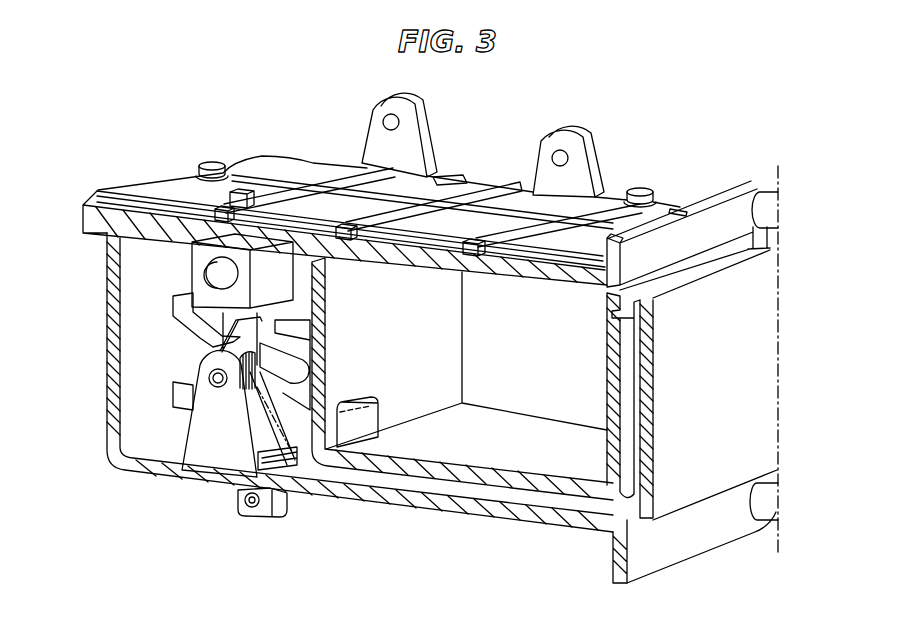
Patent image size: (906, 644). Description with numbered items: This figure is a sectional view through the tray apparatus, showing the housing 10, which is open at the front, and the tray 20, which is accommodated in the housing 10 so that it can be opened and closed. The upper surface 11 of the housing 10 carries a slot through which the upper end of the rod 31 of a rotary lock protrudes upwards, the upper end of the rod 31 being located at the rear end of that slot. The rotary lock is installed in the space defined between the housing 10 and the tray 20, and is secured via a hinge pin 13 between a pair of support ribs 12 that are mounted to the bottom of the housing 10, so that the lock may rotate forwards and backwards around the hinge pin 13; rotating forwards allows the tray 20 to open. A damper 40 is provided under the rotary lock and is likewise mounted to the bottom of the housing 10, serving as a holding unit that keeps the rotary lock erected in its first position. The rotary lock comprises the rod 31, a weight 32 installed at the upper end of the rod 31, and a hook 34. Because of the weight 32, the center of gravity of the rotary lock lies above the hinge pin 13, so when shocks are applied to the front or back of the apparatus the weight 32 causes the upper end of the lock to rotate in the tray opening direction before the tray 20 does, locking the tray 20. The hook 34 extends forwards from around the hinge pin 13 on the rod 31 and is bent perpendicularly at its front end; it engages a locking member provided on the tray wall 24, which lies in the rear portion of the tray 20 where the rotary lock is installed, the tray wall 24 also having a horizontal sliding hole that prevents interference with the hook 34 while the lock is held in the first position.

The housing 10 is at (443, 490).
The upper surface 11 is at (492, 205).
The support ribs 12 is at (208, 452).
The hinge pin 13 is at (208, 380).
The tray 20 is at (527, 453).
The tray wall 24 is at (195, 323).
The rod 31 is at (227, 194).
The weight 32 is at (197, 263).
The hook 34 is at (302, 443).
The damper 40 is at (253, 517).